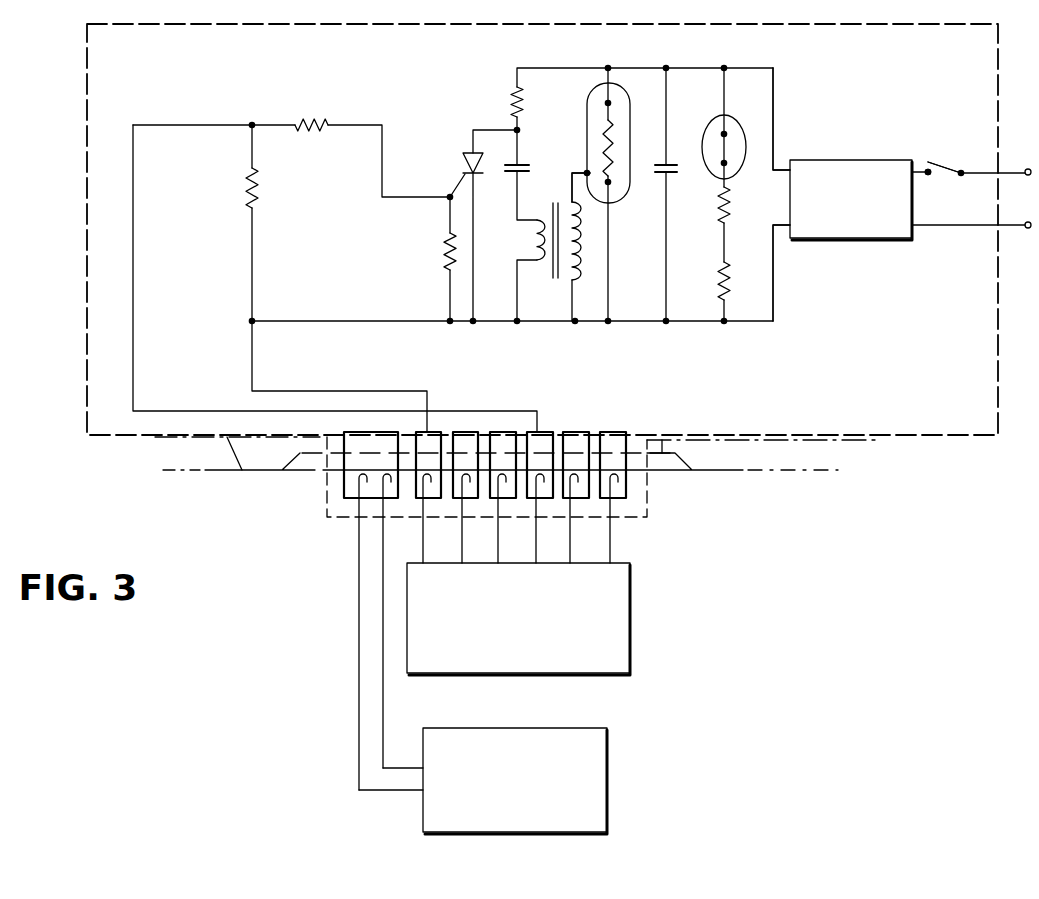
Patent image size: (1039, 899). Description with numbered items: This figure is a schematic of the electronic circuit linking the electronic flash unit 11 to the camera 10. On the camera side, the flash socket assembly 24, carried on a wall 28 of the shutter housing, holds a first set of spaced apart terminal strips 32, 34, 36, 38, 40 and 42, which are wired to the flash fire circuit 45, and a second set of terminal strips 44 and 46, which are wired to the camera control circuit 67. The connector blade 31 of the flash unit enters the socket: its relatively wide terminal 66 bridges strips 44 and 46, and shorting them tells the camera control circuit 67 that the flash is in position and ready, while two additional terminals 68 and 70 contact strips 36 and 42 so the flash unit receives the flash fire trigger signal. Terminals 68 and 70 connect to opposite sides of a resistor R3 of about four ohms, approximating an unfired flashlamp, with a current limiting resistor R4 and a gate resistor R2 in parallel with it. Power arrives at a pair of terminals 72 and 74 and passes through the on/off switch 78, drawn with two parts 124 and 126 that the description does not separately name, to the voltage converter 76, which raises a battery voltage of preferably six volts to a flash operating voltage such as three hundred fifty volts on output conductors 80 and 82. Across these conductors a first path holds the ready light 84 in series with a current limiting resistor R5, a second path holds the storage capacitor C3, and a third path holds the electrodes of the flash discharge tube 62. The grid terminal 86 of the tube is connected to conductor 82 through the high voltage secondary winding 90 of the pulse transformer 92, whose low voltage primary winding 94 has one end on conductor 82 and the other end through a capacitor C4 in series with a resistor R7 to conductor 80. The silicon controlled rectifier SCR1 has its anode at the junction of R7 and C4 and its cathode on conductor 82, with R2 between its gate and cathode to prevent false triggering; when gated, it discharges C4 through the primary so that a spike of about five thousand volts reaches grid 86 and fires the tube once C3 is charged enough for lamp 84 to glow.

The camera 10 is at (766, 466).
The electronic flash unit 11 is at (1005, 94).
The flash socket assembly 24 is at (665, 447).
The wall 28 is at (218, 440).
The connector blade 31 is at (652, 490).
The terminal strip 32 is at (616, 480).
The terminal strip 34 is at (576, 479).
The terminal strip 36 is at (540, 479).
The terminal strip 38 is at (502, 479).
The terminal strip 40 is at (466, 479).
The terminal strip 42 is at (428, 479).
The terminal strip 44 is at (386, 479).
The terminal strip 46 is at (362, 479).
The flash fire circuit 45 is at (631, 616).
The flash discharge tube 62 is at (631, 140).
The wide terminal 66 is at (345, 433).
The camera control circuit 67 is at (608, 772).
The terminal 68 is at (545, 438).
The terminal 70 is at (435, 440).
The output terminal 72 is at (1025, 161).
The output terminal 74 is at (975, 238).
The voltage converter 76 is at (880, 239).
The on/off switch 78 is at (938, 158).
The output conductor 80 is at (774, 120).
The output conductor 82 is at (774, 278).
The ready light 84 is at (736, 126).
The grid terminal 86 is at (587, 172).
The high voltage secondary winding 90 is at (580, 241).
The pulse transformer 92 is at (556, 289).
The low voltage primary winding 94 is at (536, 240).
The switch blade 124 is at (950, 166).
The switch contact 126 is at (929, 176).
The gate resistor R2 is at (435, 251).
The resistor R3 is at (267, 188).
The current limiting resistor R4 is at (311, 113).
The resistor R5 is at (740, 281).
The resistor R7 is at (500, 102).
The storage capacitor C3 is at (676, 181).
The capacitor C4 is at (508, 157).
The silicon controlled rectifier SCR1 is at (447, 162).